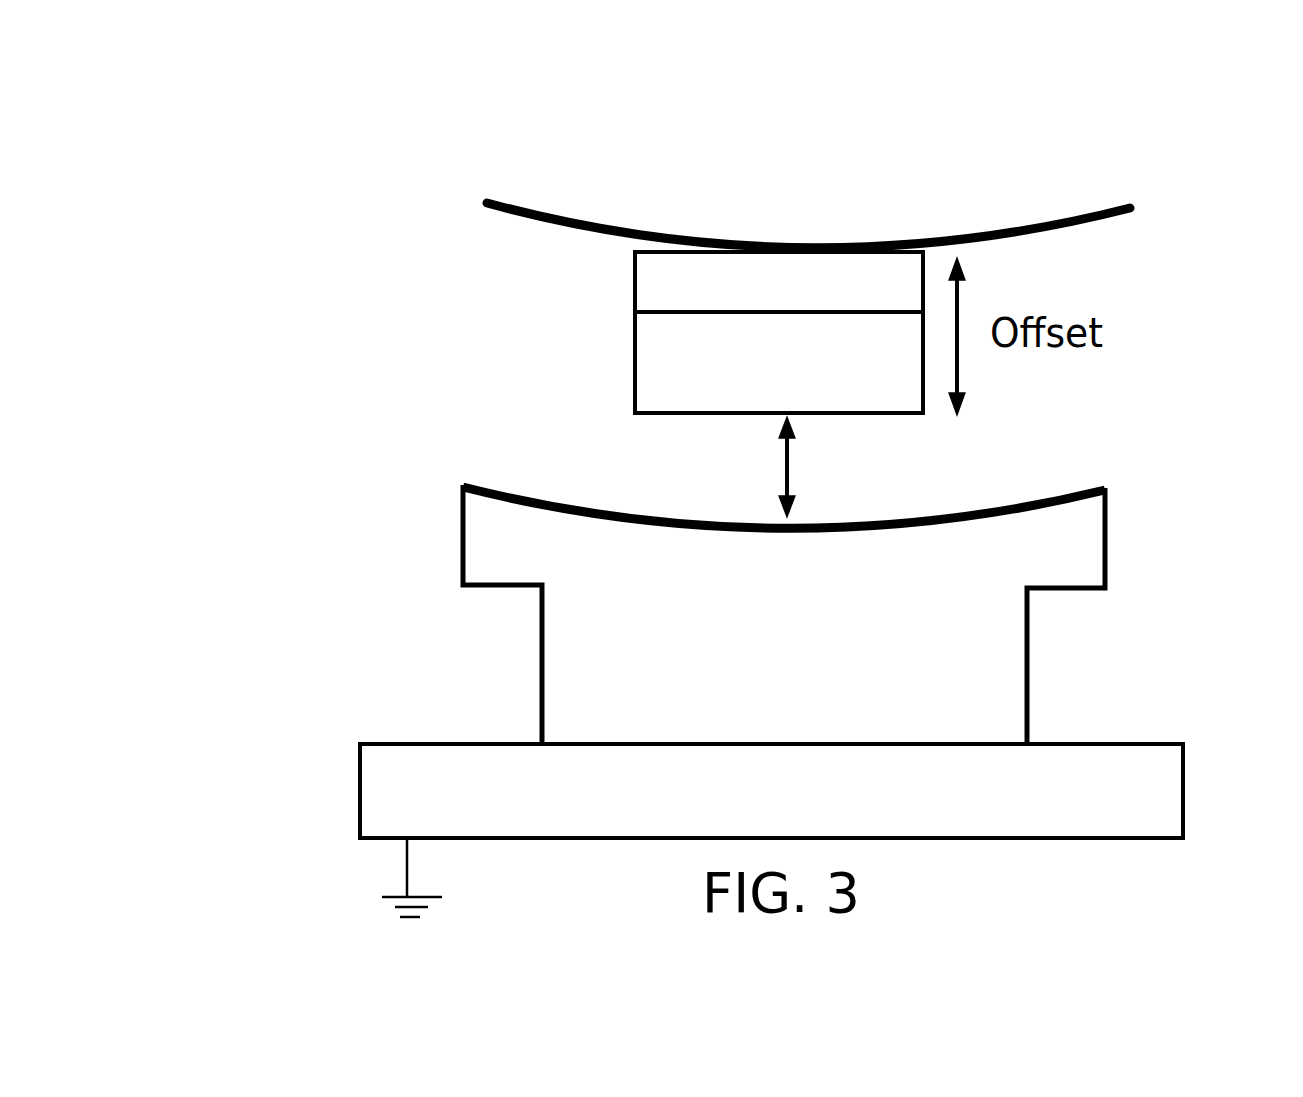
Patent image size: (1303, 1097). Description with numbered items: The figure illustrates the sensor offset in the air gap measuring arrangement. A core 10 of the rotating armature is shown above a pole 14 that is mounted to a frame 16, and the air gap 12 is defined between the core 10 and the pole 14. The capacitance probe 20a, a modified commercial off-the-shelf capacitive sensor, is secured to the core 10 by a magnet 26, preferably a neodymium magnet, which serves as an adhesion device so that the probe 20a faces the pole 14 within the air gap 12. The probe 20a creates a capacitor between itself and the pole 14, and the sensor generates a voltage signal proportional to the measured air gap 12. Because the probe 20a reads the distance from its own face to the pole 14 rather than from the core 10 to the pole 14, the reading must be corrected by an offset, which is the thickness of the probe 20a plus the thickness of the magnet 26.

The core 10 is at (1088, 186).
The magnet 26 is at (587, 276).
The capacitance probe 20a is at (592, 353).
The air gap 12 is at (992, 465).
The pole 14 is at (495, 553).
The frame 16 is at (455, 768).